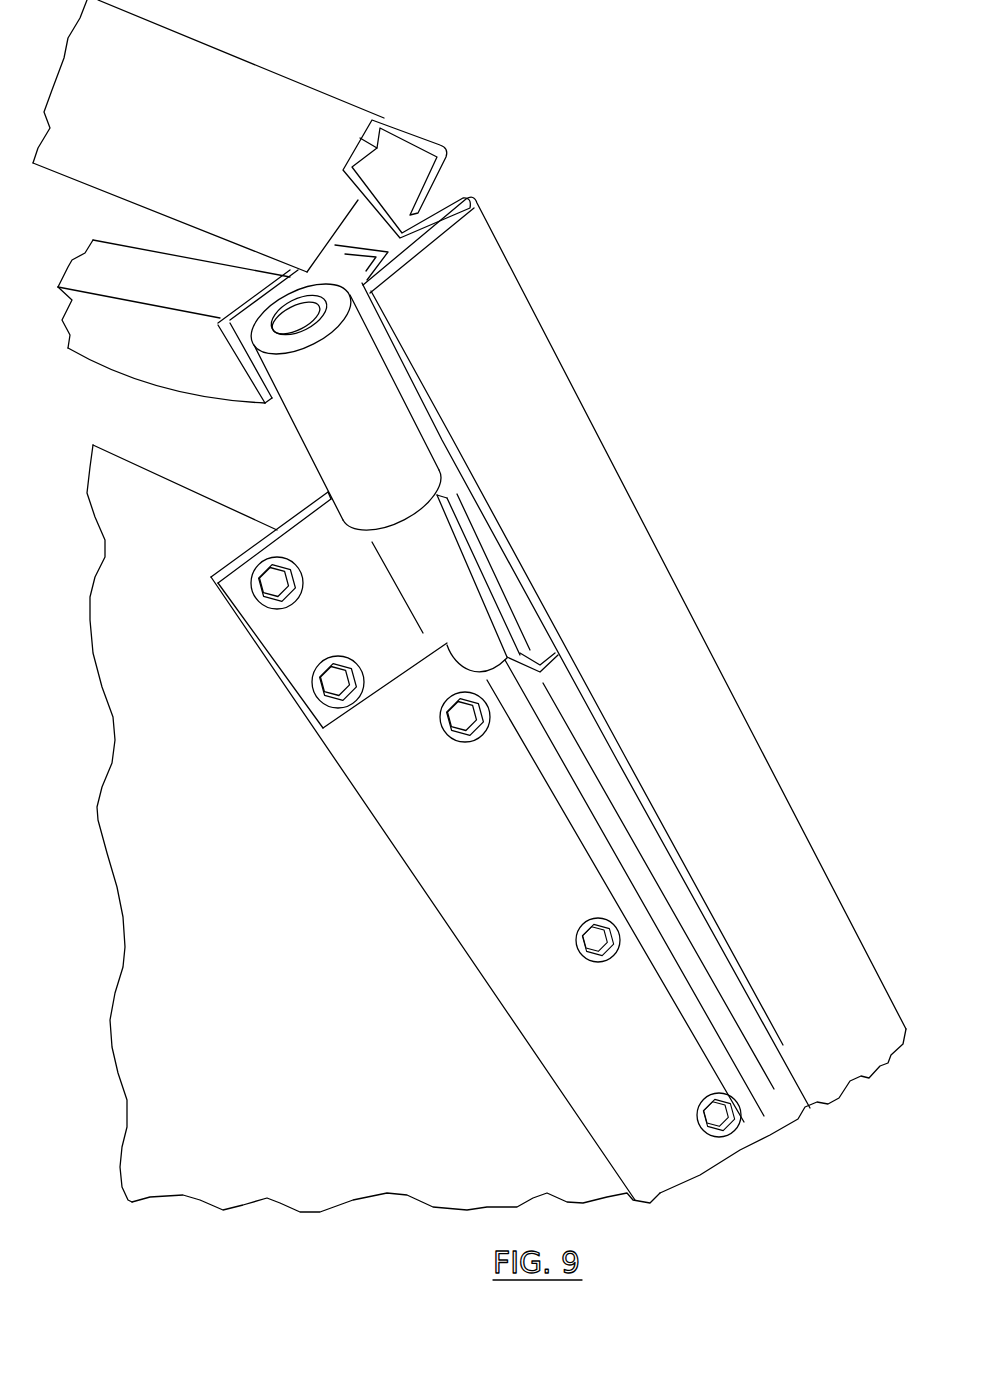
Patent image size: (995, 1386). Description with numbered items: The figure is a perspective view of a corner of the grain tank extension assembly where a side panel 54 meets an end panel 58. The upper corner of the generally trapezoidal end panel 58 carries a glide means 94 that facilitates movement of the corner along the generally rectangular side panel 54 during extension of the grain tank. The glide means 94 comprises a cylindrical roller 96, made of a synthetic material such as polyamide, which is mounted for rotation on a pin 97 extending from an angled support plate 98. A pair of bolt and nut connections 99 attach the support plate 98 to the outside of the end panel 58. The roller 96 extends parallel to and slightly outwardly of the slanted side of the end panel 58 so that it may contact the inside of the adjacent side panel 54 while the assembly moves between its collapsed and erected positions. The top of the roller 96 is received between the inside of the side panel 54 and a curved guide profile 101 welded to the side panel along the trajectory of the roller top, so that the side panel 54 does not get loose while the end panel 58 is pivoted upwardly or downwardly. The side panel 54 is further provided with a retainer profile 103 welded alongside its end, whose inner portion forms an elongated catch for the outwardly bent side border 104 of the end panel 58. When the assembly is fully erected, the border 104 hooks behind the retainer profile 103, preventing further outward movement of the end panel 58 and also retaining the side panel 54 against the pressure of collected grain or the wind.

The side panel 54 is at (596, 408).
The end panel 58 is at (322, 1034).
The glide means 94 is at (257, 217).
The cylindrical roller 96 is at (297, 416).
The pin 97 is at (458, 643).
The angled support plate 98 is at (262, 553).
The bolt and nut connections 99 is at (333, 692).
The curved guide profile 101 is at (122, 350).
The retainer profile 103 is at (684, 902).
The outwardly bent side border 104 is at (513, 625).